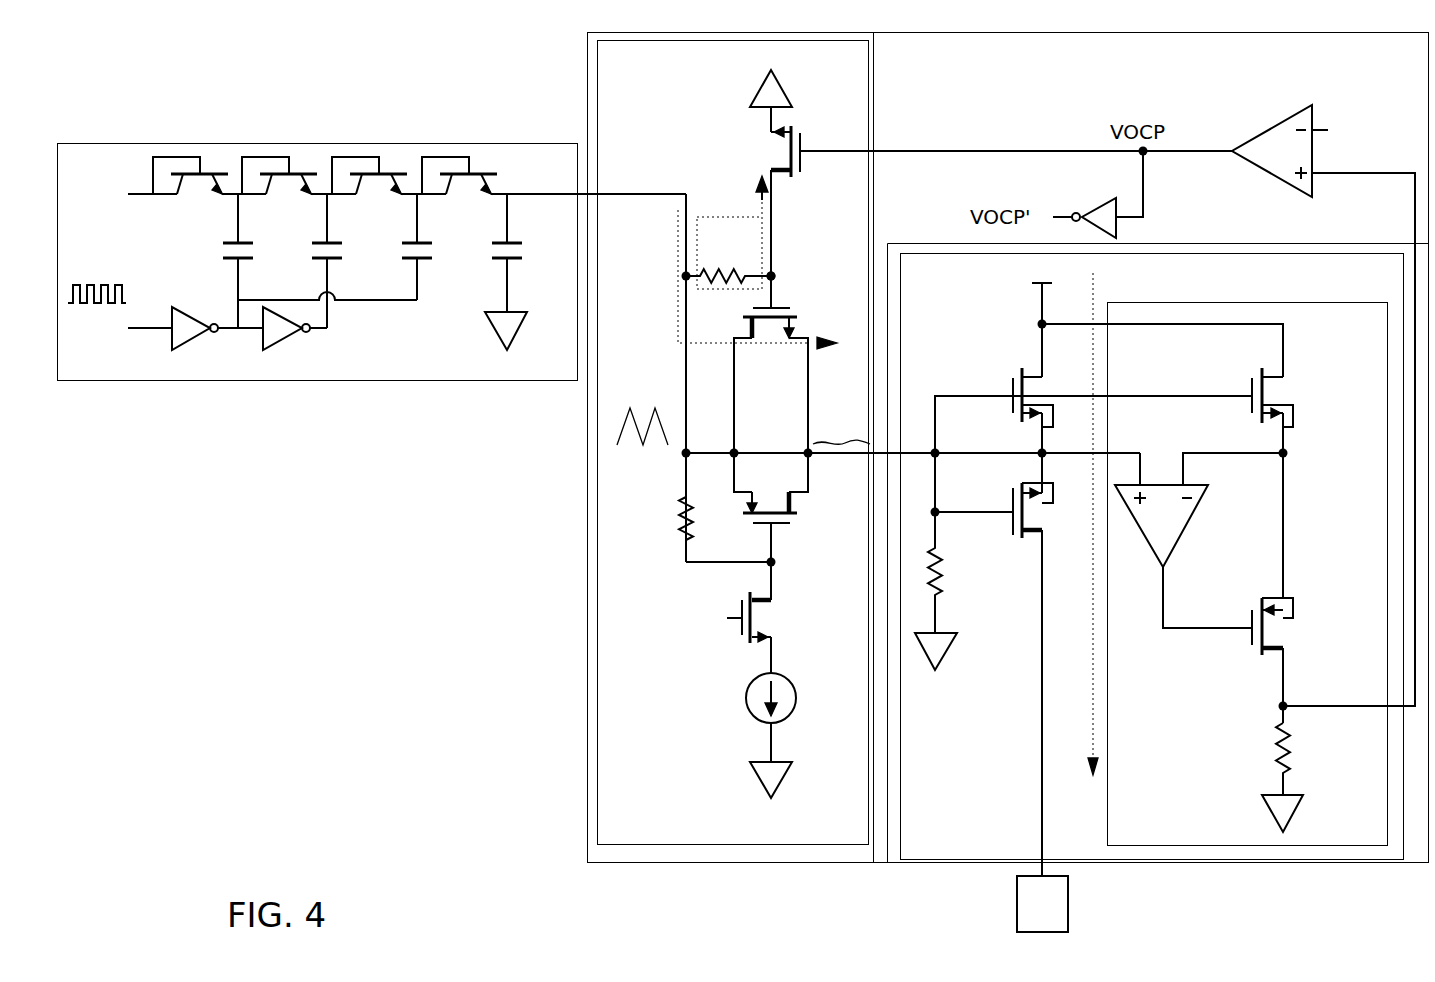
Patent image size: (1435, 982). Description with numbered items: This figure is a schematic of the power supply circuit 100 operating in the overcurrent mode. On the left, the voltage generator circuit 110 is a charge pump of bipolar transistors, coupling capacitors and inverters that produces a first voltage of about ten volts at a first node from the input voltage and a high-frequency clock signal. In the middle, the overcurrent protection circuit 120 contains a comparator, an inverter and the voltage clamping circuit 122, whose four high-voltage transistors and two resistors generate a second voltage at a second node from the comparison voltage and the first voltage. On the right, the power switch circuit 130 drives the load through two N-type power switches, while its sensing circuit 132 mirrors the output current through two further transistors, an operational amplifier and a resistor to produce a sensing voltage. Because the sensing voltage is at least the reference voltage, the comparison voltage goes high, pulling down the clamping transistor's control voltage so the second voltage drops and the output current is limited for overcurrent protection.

The power supply circuit 100 is at (125, 64).
The voltage generator circuit 110 is at (365, 388).
The overcurrent protection circuit 120 is at (690, 866).
The voltage clamping circuit 122 is at (785, 846).
The power switch circuit 130 is at (1218, 862).
The sensing circuit 132 is at (1145, 848).